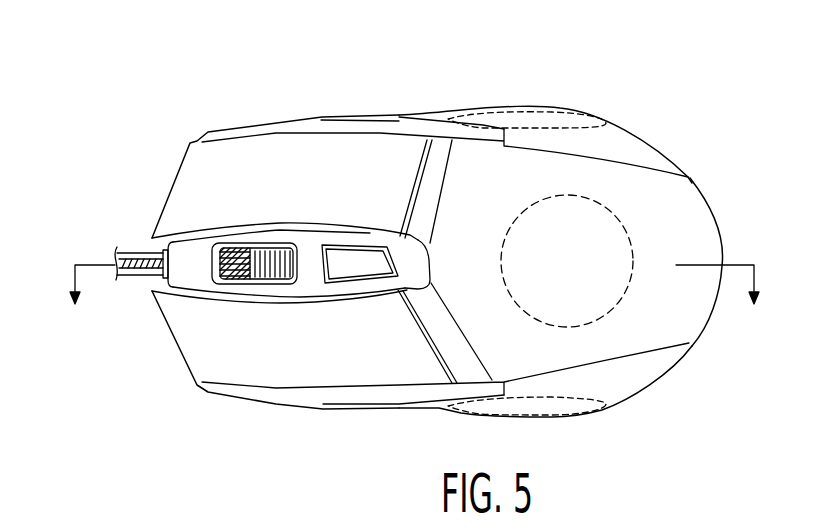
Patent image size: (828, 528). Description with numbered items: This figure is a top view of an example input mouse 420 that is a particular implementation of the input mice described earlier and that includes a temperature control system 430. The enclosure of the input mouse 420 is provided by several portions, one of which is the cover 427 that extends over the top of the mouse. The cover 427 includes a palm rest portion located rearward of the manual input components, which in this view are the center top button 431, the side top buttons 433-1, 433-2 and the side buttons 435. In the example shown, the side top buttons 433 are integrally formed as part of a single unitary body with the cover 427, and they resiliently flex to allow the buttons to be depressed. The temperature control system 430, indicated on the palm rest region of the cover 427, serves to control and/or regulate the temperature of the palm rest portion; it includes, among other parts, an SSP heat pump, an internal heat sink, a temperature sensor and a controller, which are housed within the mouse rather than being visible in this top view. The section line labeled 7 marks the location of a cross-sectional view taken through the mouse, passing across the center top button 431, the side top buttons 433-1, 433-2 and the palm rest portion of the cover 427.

The input mouse 420 is at (100, 128).
The cover 427 is at (543, 160).
The temperature control system 430 is at (614, 226).
The center top button 431 is at (357, 262).
The side top buttons 433 is at (268, 278).
The side top button 433-1 is at (190, 346).
The side top button 433-2 is at (200, 160).
The side buttons 435 is at (434, 117).
The section line 7- 7 is at (414, 303).